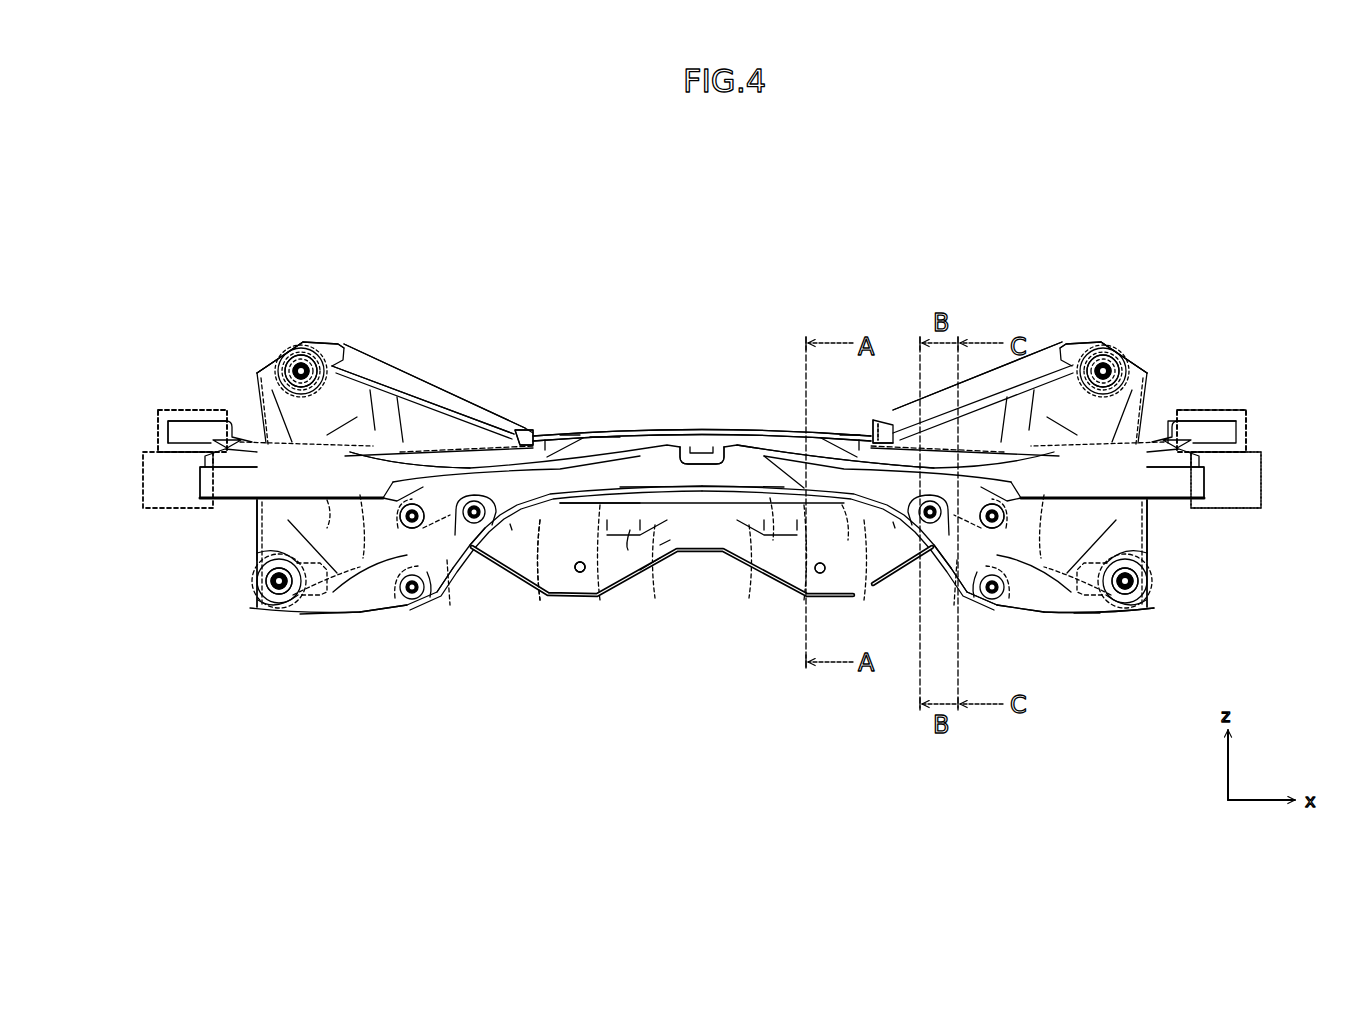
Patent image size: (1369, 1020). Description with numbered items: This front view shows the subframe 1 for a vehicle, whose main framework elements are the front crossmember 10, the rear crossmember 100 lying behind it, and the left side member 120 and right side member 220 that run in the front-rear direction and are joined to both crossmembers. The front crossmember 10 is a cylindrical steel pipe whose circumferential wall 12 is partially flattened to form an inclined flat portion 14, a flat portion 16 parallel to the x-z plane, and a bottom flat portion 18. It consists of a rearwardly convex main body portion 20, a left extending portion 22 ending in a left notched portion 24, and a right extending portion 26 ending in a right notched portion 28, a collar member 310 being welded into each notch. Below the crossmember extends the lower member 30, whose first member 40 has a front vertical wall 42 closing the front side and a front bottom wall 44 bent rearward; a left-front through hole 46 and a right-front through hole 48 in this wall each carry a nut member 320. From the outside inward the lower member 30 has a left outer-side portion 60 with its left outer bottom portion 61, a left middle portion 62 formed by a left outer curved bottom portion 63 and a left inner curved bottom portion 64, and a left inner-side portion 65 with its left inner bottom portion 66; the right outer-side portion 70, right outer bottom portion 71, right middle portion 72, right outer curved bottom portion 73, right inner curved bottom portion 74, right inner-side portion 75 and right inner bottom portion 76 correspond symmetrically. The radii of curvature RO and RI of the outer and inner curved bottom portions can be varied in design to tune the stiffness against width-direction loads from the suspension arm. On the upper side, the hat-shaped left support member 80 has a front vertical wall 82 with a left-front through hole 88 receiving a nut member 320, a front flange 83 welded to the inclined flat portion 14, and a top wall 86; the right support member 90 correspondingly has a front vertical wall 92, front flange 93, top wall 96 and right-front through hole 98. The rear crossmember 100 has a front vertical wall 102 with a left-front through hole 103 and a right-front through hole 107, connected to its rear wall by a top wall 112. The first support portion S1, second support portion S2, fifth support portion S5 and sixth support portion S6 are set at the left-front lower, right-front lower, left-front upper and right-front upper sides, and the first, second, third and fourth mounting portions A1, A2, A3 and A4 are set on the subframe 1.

The subframe 1 is at (1048, 234).
The front crossmember 10 is at (775, 378).
The circumferential wall 12 is at (652, 432).
The inclined flat portion 14 is at (568, 434).
The flat portion 16 is at (605, 437).
The bottom flat portion 18 is at (337, 527).
The main body portion 20 is at (695, 403).
The left extending portion 22 is at (1160, 508).
The left notched portion 24 is at (1203, 476).
The right extending portion 26 is at (245, 506).
The right notched portion 28 is at (200, 471).
The lower member 30 is at (1128, 672).
The first member 40 is at (1080, 634).
The front vertical wall 42 is at (740, 451).
The front bottom wall 44 is at (697, 500).
The left-front through hole 46 is at (1136, 582).
The right-front through hole 48 is at (280, 584).
The left outer-side portion 60 is at (1043, 613).
The left outer bottom portion 61 is at (1082, 620).
The left middle portion 62 is at (940, 579).
The left outer curved bottom portion 63 is at (983, 612).
The left inner curved bottom portion 64 is at (850, 510).
The left inner-side portion 65 is at (775, 500).
The left inner bottom portion 66 is at (770, 500).
The right outer-side portion 70 is at (358, 617).
The right outer bottom portion 71 is at (345, 620).
The right middle portion 72 is at (475, 572).
The right outer curved bottom portion 73 is at (449, 605).
The right inner curved bottom portion 74 is at (540, 510).
The right inner-side portion 75 is at (599, 565).
The right inner bottom portion 76 is at (597, 498).
The left support member 80 is at (1015, 341).
The front vertical wall 82 is at (1048, 346).
The front flange 83 is at (883, 440).
The top wall 86 is at (894, 386).
The left-front through hole 88 is at (1110, 372).
The right support member 90 is at (435, 346).
The front vertical wall 92 is at (392, 362).
The front flange 93 is at (535, 428).
The top wall 96 is at (497, 390).
The right-front through hole 98 is at (296, 371).
The rear crossmember 100 is at (665, 562).
The front vertical wall 102 is at (630, 552).
The left-front through hole 103 is at (820, 574).
The right-front through hole 107 is at (580, 573).
The top wall 112 is at (667, 542).
The left side member 120 is at (1170, 418).
The right side member 220 is at (236, 410).
The collar member 310 is at (158, 436).
The nut member 320 is at (301, 367).
The first support portion S1 is at (1170, 564).
The second support portion S2 is at (243, 568).
The fifth support portion S5 is at (1125, 346).
The sixth support portion S6 is at (275, 341).
The first mounting portion A1 is at (1250, 516).
The second mounting portion A2 is at (1207, 389).
The third mounting portion A3 is at (164, 521).
The fourth mounting portion A4 is at (168, 386).
The radius of curvature RI is at (510, 524).
The radius of curvature RO is at (435, 580).